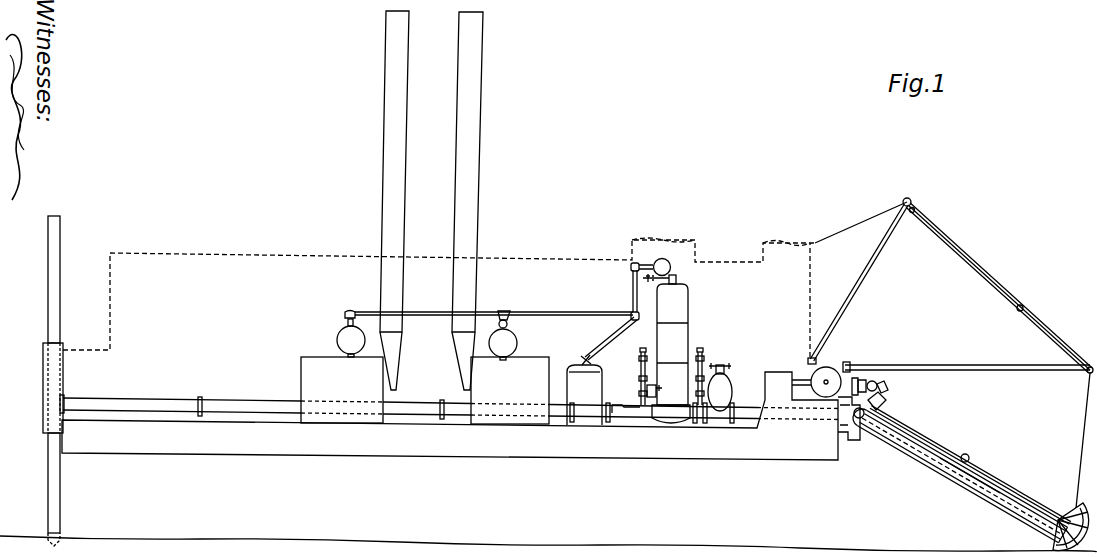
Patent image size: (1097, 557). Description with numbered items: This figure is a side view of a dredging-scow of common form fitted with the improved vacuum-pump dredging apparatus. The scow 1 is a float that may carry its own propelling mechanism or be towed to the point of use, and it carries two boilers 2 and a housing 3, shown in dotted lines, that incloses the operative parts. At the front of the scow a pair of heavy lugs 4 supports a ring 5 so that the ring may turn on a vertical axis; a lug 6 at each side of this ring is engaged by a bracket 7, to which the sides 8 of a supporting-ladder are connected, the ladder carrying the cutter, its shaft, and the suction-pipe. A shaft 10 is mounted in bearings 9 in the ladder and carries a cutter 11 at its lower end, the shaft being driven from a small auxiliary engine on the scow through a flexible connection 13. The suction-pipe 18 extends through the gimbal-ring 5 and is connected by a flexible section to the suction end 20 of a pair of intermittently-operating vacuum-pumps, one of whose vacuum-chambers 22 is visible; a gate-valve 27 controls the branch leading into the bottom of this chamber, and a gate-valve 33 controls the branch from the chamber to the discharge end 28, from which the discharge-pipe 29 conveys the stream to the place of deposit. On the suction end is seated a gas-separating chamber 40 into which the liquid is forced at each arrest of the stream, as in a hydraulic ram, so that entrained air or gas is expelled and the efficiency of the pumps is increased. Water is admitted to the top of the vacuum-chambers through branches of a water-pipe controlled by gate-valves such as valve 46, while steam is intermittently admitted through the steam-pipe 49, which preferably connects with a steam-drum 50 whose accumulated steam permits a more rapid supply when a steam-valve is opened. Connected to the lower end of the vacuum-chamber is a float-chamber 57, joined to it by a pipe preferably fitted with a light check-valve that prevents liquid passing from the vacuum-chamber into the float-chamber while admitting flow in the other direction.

The scow 1 is at (450, 416).
The boiler 2 is at (425, 217).
The housing 3 is at (439, 299).
The lugs 4 is at (867, 386).
The ring 5 is at (848, 433).
The lug 6 is at (31, 381).
The bracket 7 is at (885, 404).
The supporting-ladder sides 8 is at (913, 445).
The bearings 9 is at (974, 452).
The shaft 10 is at (952, 452).
The cutter 11 is at (1074, 523).
The flexible connection 13 is at (857, 380).
The suction-pipe 18 is at (972, 482).
The suction end 20 is at (723, 406).
The vacuum-chamber 22 is at (683, 349).
The valve 27 is at (703, 393).
The discharge end 28 is at (628, 414).
The discharge-pipe 29 is at (449, 401).
The valve 33 is at (642, 398).
The gas-separating chamber 40 is at (738, 378).
The valve 46 is at (660, 284).
The steam-pipe 49 is at (494, 305).
The steam-drum 50 is at (660, 262).
The float-chamber 57 is at (657, 394).